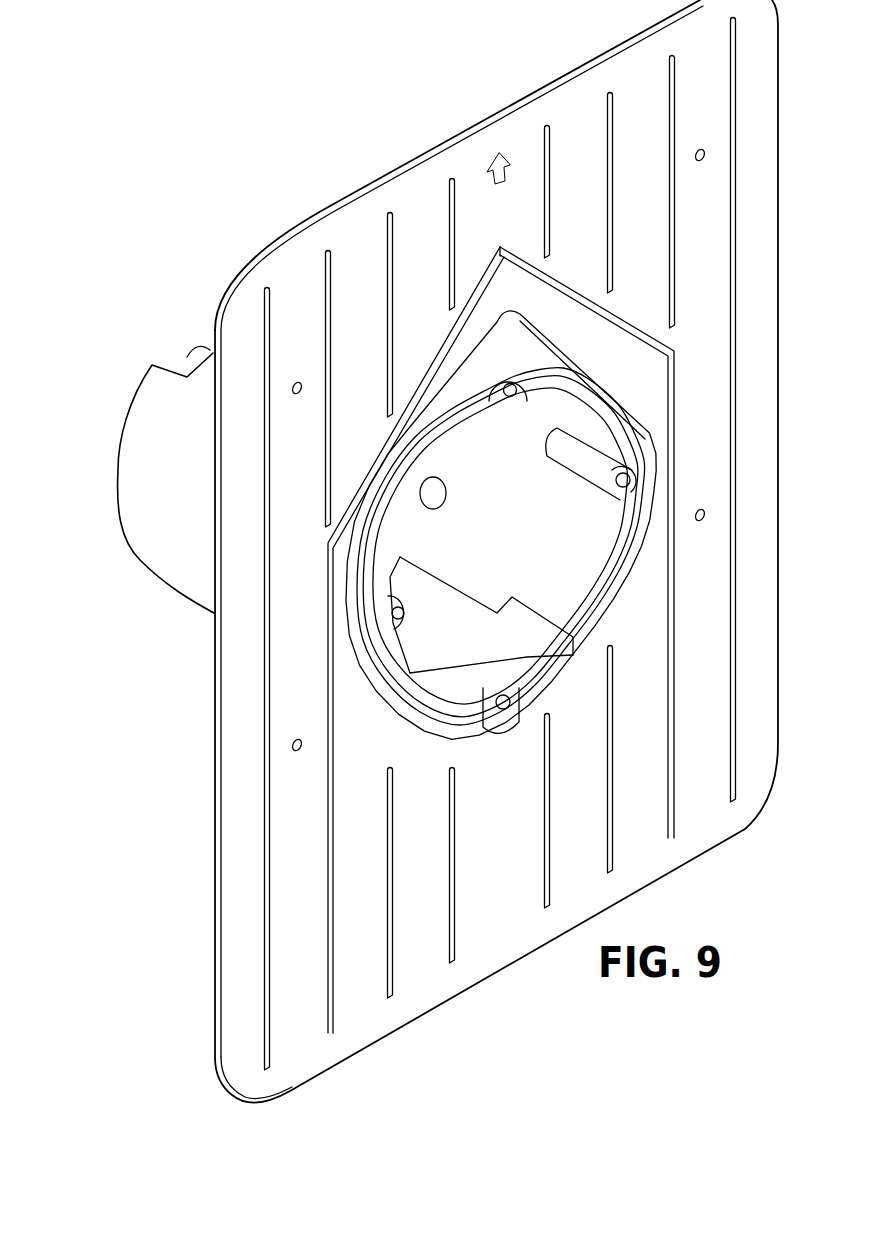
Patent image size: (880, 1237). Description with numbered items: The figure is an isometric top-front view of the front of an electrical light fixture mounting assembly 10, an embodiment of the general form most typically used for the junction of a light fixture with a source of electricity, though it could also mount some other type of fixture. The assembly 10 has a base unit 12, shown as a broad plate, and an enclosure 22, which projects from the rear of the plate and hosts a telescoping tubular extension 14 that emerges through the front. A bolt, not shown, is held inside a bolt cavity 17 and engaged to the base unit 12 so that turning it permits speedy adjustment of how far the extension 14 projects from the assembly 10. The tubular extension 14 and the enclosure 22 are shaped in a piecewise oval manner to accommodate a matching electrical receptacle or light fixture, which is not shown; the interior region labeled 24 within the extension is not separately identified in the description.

The electrical light fixture mounting assembly 10 is at (437, 104).
The base unit 12 is at (780, 147).
The telescoping tubular extension 14 is at (641, 432).
The bolt cavity 17 is at (446, 493).
The enclosure 22 is at (118, 485).
The ring interior cavity 24 is at (511, 553).